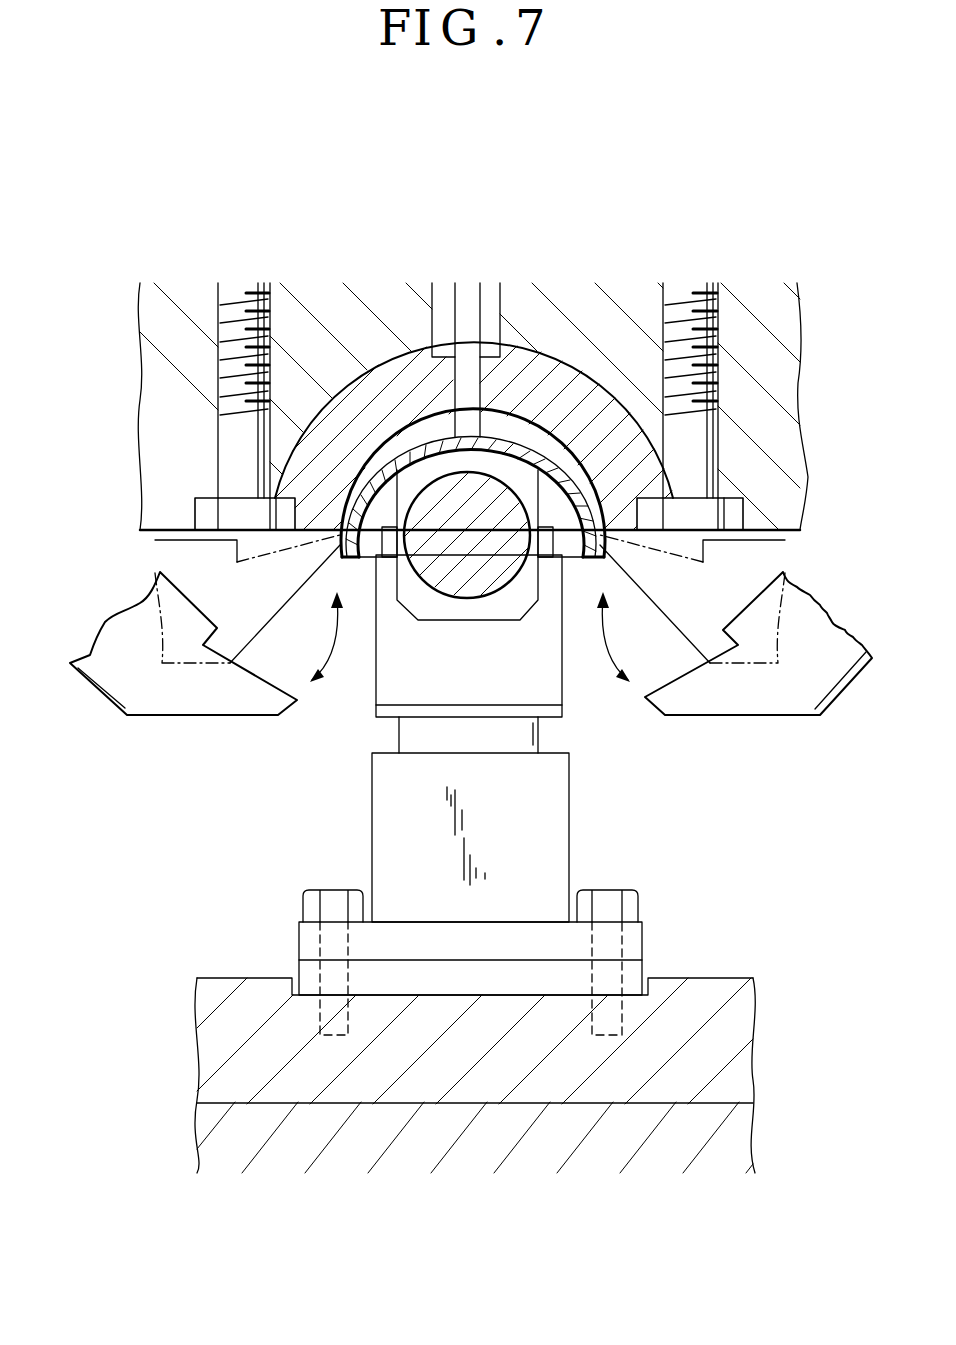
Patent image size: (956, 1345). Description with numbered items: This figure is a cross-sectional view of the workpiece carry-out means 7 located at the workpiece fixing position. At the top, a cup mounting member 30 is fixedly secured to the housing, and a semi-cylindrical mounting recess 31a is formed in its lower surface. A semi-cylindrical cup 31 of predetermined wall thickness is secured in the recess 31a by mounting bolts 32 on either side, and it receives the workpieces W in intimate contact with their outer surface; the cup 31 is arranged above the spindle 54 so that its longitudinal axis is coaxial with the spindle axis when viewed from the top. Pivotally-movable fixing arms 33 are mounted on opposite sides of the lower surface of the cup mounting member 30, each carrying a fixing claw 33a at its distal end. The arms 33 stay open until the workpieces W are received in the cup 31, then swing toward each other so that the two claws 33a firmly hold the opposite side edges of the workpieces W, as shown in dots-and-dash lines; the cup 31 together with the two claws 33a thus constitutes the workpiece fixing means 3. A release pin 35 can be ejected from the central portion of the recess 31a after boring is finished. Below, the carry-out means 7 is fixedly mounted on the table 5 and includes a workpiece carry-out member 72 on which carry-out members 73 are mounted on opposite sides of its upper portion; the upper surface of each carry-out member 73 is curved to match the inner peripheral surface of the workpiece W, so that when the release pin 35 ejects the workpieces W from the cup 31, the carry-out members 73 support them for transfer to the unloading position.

The workpiece fixing means 3 is at (468, 649).
The table 5 is at (735, 1028).
The workpiece carry-out means 7 is at (262, 890).
The cup mounting member 30 is at (757, 371).
The semi-cylindrical cup 31 is at (568, 388).
The mounting recess 31a is at (400, 432).
The mounting bolts 32 is at (232, 332).
The fixing arms 33 is at (797, 683).
The fixing claw 33a is at (293, 708).
The release pin 35 is at (465, 298).
The spindle 54 is at (553, 630).
The workpiece carry-out member 72 is at (480, 572).
The carry-out members 73 is at (350, 567).
The workpiece W is at (572, 458).